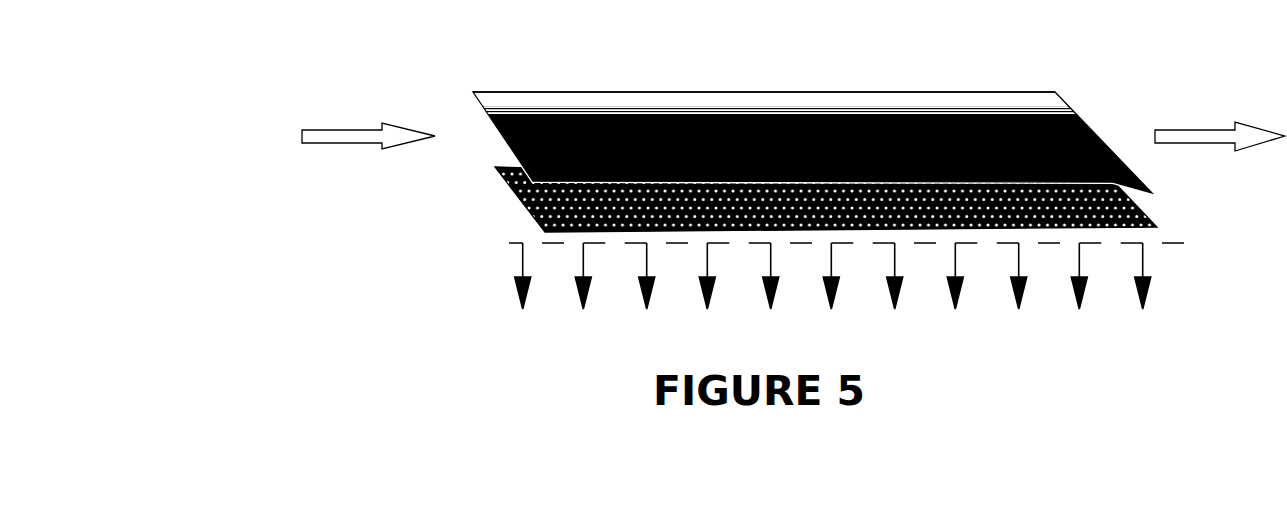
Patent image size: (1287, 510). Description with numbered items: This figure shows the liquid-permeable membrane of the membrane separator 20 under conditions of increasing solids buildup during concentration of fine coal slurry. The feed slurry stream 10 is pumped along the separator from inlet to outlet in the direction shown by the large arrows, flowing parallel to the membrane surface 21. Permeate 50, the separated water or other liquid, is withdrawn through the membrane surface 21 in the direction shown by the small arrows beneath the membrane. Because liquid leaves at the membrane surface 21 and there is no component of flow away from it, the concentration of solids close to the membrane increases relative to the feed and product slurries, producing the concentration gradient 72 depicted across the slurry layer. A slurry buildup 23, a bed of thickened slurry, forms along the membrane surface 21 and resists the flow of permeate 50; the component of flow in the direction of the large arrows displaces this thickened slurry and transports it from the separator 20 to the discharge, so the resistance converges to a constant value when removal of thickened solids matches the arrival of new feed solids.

The feed slurry stream 10 is at (347, 130).
The membrane separator 20 is at (967, 92).
The concentration gradient 72 is at (612, 102).
The slurry buildup 23 is at (1159, 227).
The membrane surface 21 is at (509, 243).
The permeate 50 is at (1150, 296).